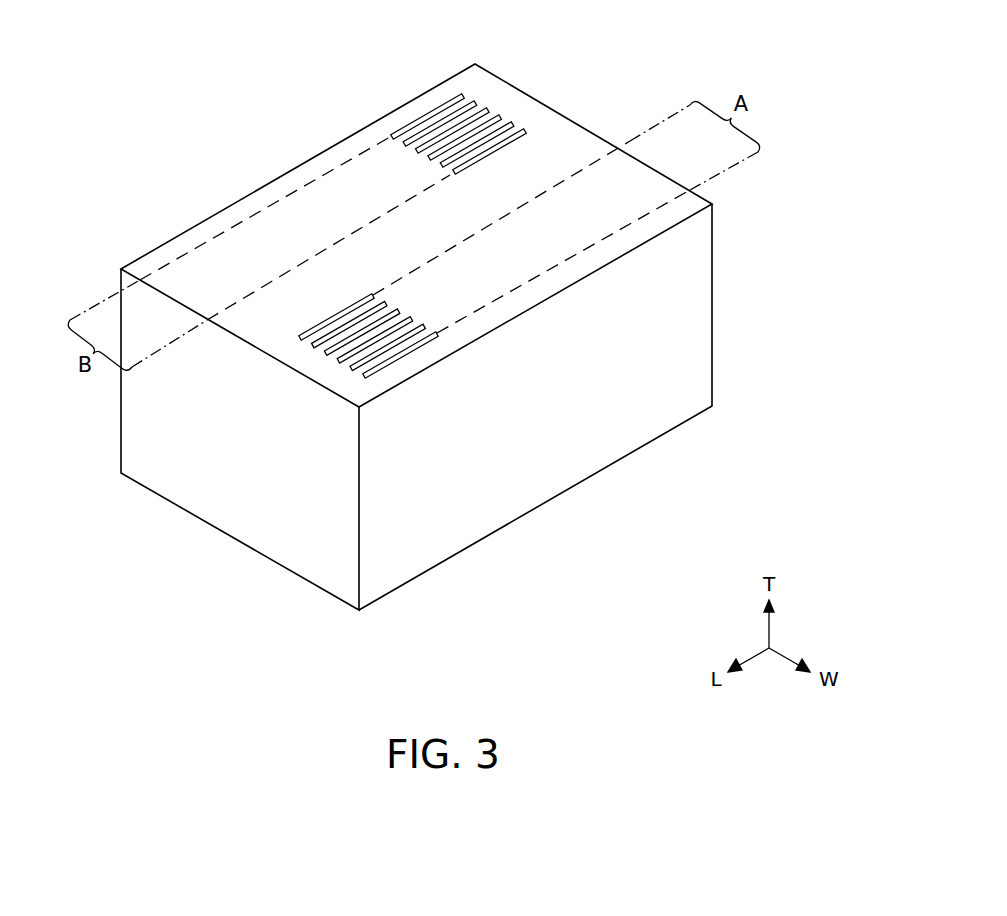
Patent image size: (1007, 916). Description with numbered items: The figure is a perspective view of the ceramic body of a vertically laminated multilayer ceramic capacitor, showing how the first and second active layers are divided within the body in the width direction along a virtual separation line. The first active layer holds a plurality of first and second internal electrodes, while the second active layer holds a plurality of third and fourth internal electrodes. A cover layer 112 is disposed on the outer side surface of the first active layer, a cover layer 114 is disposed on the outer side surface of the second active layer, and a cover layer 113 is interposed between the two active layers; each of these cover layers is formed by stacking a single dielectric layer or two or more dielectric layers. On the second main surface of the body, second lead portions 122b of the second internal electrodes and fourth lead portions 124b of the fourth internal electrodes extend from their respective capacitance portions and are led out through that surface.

The cover layer 112 is at (583, 262).
The cover layer 113 is at (333, 163).
The cover layer 114 is at (528, 182).
The second lead portion 122b is at (411, 323).
The fourth lead portion 124b is at (478, 103).